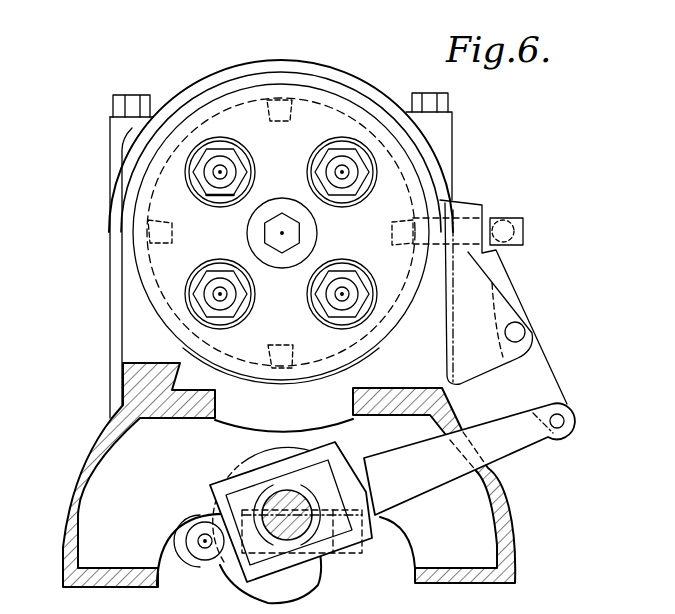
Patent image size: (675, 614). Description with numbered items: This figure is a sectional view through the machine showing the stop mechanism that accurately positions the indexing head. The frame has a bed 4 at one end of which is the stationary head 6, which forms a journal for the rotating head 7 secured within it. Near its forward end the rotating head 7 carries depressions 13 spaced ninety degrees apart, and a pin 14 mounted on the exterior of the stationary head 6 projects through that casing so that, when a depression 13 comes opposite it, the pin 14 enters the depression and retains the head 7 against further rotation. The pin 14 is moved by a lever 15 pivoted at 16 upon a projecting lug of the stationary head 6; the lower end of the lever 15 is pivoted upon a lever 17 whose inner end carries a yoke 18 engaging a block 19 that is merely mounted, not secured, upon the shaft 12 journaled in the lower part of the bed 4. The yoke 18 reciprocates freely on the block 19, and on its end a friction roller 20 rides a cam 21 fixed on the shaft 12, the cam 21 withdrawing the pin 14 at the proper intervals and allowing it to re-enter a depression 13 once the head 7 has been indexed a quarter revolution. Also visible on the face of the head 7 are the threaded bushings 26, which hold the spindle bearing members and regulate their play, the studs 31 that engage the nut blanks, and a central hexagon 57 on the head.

The bed 4 is at (285, 475).
The stationary head 6 is at (412, 164).
The rotating head 7 is at (404, 250).
The shaft 12 is at (308, 535).
The depressions 13 is at (264, 105).
The pin 14 is at (516, 232).
The lever 15 is at (535, 267).
The pivot 16 is at (525, 331).
The lever 17 is at (517, 453).
The yoke 18 is at (318, 458).
The block 19 is at (305, 502).
The friction roller 20 is at (197, 520).
The cam 21 is at (238, 592).
The bushing 26 is at (233, 193).
The stud 31 is at (224, 170).
The shaft hexagon 57 is at (282, 214).